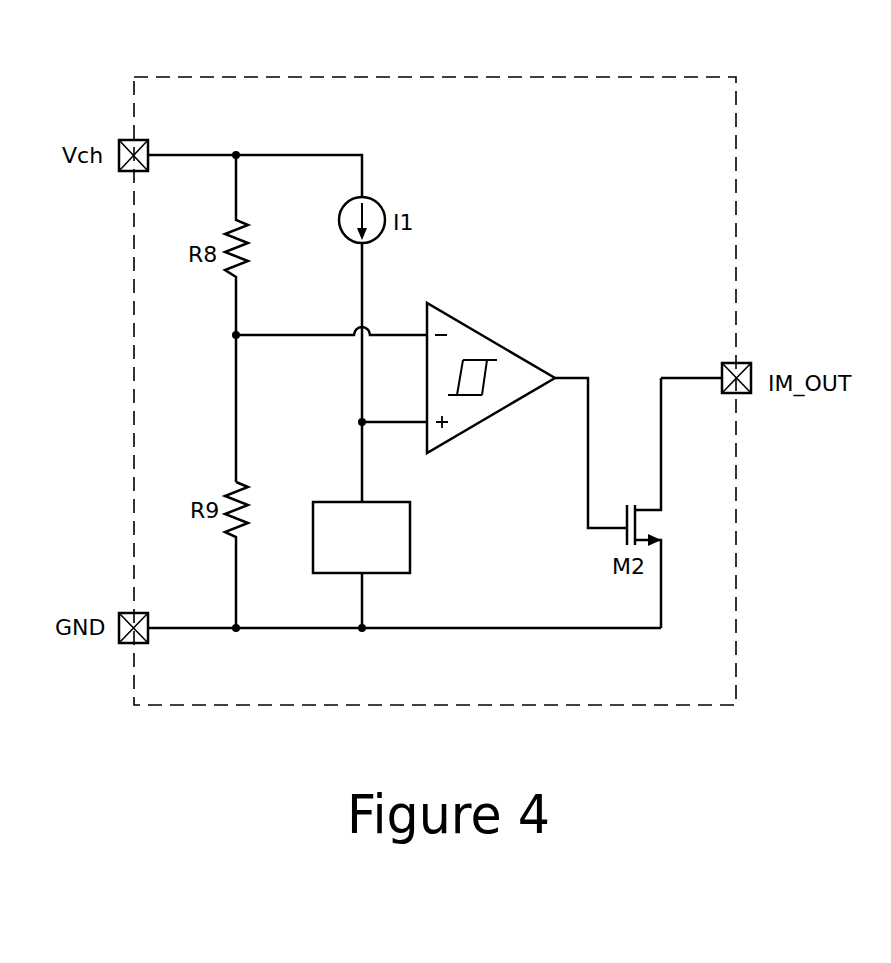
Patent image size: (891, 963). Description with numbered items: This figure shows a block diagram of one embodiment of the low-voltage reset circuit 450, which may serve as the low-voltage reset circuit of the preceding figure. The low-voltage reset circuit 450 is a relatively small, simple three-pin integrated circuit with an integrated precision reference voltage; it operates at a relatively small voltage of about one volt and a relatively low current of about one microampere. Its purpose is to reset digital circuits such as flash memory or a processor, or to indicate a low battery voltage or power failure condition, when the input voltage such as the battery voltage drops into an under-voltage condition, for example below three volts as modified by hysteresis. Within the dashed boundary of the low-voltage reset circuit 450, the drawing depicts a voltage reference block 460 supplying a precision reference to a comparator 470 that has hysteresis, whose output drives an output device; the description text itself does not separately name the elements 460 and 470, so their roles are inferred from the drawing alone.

The low-voltage reset circuit 450 is at (369, 77).
The reference voltage source VREF 460 is at (410, 538).
The hysteresis comparator 470 is at (492, 338).